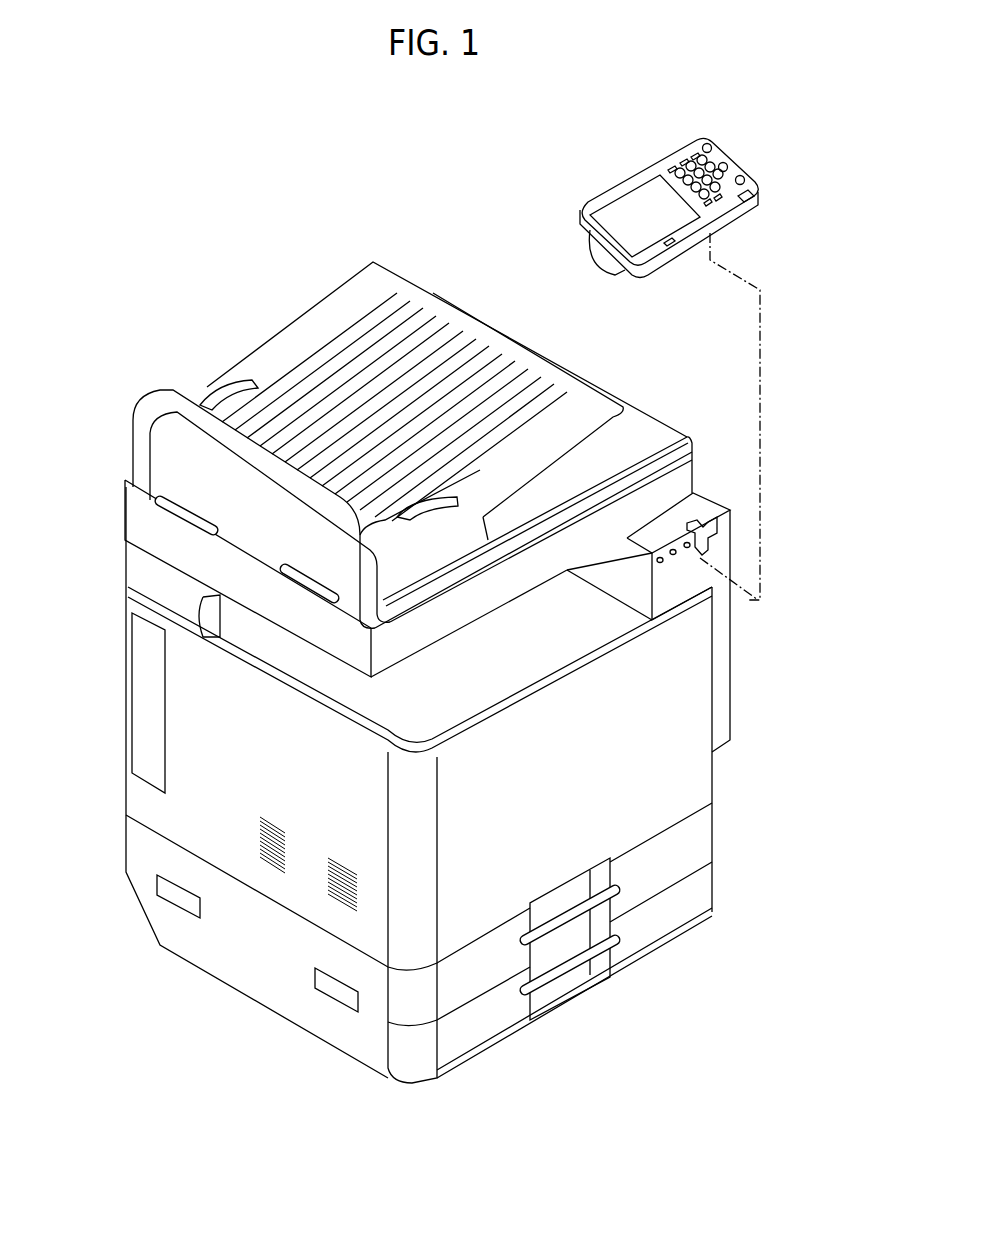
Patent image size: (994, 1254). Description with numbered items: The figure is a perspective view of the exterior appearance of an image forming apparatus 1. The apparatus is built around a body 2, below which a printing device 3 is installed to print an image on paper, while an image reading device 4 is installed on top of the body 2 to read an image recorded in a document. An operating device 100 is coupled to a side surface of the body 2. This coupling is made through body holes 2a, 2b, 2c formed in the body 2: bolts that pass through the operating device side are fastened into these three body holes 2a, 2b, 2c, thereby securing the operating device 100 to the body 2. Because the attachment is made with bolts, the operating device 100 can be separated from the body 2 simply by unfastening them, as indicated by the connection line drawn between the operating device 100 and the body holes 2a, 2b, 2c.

The image forming apparatus 1 is at (80, 278).
The body 2 is at (742, 533).
The body hole 2a is at (662, 562).
The body hole 2b is at (675, 554).
The body hole 2c is at (690, 547).
The printing device 3 is at (118, 693).
The image reading device 4 is at (118, 451).
The operating device 100 is at (627, 158).